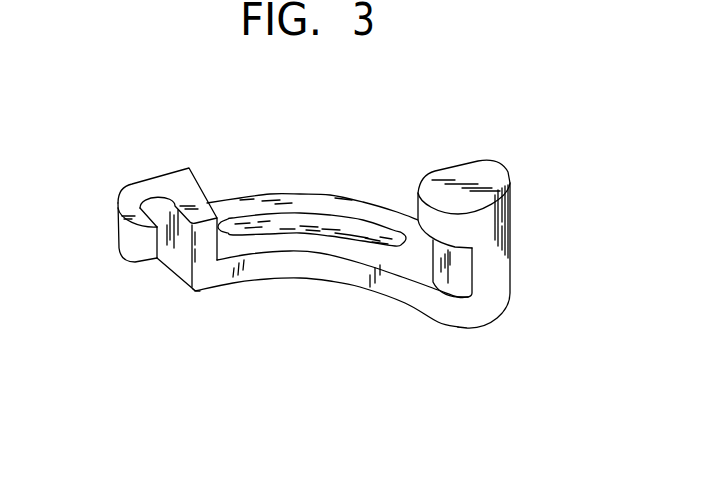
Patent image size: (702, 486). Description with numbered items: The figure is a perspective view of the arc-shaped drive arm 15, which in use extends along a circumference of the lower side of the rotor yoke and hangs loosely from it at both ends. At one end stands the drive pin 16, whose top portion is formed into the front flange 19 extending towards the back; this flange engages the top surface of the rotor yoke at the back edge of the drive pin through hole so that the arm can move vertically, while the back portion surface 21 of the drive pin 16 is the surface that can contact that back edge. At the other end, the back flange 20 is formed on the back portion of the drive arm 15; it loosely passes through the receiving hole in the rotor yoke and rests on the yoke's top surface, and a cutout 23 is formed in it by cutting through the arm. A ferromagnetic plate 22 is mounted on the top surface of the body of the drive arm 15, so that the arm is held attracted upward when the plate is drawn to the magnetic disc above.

The drive arm 15 is at (277, 268).
The drive pin 16 is at (493, 252).
The front flange 19 is at (458, 177).
The back flange 20 is at (135, 189).
The back portion surface 21 is at (438, 258).
The ferromagnetic plate 22 is at (308, 220).
The cutout 23 is at (163, 215).